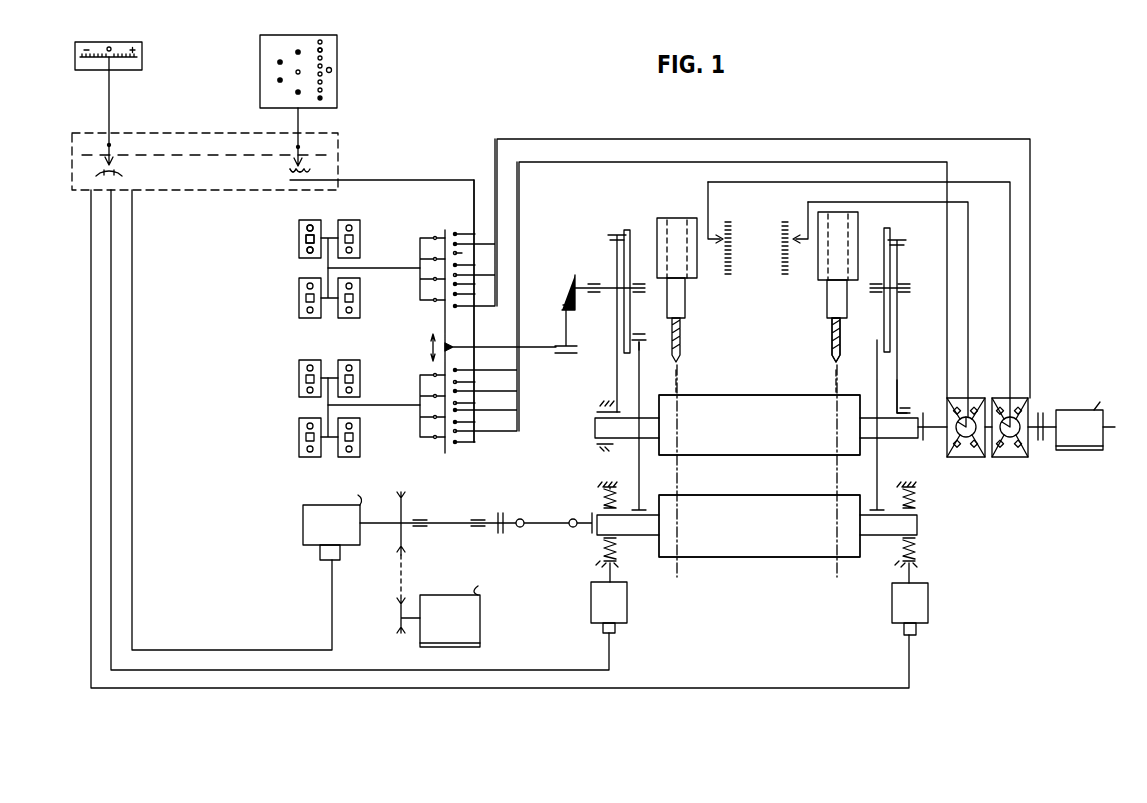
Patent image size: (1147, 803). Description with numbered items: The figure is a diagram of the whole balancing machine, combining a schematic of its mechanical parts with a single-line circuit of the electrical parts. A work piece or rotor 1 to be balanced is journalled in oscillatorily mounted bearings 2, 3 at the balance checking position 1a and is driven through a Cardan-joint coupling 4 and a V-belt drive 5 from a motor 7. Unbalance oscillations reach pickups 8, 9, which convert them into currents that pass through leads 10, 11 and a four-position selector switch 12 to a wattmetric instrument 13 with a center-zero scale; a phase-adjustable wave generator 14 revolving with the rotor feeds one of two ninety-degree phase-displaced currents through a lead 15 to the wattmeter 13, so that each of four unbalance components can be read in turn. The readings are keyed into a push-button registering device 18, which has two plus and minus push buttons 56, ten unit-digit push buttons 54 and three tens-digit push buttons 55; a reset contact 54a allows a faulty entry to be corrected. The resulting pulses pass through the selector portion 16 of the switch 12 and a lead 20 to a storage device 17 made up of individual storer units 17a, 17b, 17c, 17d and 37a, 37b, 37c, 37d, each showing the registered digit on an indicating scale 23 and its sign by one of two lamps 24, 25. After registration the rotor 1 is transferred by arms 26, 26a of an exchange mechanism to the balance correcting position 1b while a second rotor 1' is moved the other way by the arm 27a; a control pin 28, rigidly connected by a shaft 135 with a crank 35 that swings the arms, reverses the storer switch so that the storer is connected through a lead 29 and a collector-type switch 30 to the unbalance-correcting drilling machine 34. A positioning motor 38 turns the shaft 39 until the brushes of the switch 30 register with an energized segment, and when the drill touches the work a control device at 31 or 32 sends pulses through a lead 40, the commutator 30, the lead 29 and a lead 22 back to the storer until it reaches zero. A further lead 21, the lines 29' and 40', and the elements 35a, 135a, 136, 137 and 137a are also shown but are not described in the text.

The rotor 1 is at (756, 474).
The second rotor 1' is at (759, 438).
The balance checking position 1a is at (759, 537).
The balance correcting position 1b is at (759, 438).
The bearing 2 is at (918, 545).
The bearing 3 is at (598, 545).
The Cardan-joint coupling 4 is at (548, 528).
The V-belt drive 5 is at (404, 575).
The motor 7 is at (480, 628).
The pickup 8 is at (627, 600).
The pickup 9 is at (928, 605).
The lead 10 is at (542, 668).
The lead 11 is at (682, 686).
The four-position selector switch 12 is at (198, 185).
The wattmetric instrument 13 is at (142, 66).
The phase-adjustable wave generator 14 is at (303, 528).
The lead 15 is at (240, 648).
The selector portion 16 is at (306, 165).
The storage device 17 is at (328, 355).
The storer unit 17a is at (299, 228).
The storer unit 17b is at (299, 296).
The storer unit 17c is at (360, 232).
The storer unit 17d is at (360, 298).
The registering device 18 is at (337, 98).
The lead 20 is at (388, 187).
The control line 21 is at (402, 408).
The lead 22 is at (378, 270).
The indicating scale 23 is at (305, 240).
The lamp 24 is at (308, 217).
The lamp 25 is at (306, 252).
The arm 26 is at (641, 462).
The arm 26a is at (875, 462).
The arm 27a is at (899, 386).
The control pin 28 is at (573, 290).
The lead 29 is at (763, 260).
The control line 29' is at (733, 296).
The collector-type switch 30 is at (1020, 402).
The control device 31 is at (733, 238).
The control device 32 is at (780, 262).
The drilling machine 34 is at (830, 340).
The crank 35 is at (631, 325).
The contact plate 35a is at (890, 320).
The storer unit 37a is at (299, 382).
The storer unit 37b is at (299, 440).
The storer unit 37c is at (360, 375).
The storer unit 37d is at (360, 440).
The positioning motor 38 is at (1103, 432).
The shaft 39 is at (938, 432).
The lead 40 is at (859, 286).
The control line 40' is at (902, 309).
The push buttons 54 is at (322, 50).
The reset contact 54a is at (332, 70).
The push buttons 55 is at (296, 92).
The push buttons 56 is at (278, 62).
The shaft 135 is at (647, 292).
The contact 135a is at (920, 278).
The contact 136 is at (648, 338).
The contact 137 is at (606, 238).
The contact 137a is at (920, 228).